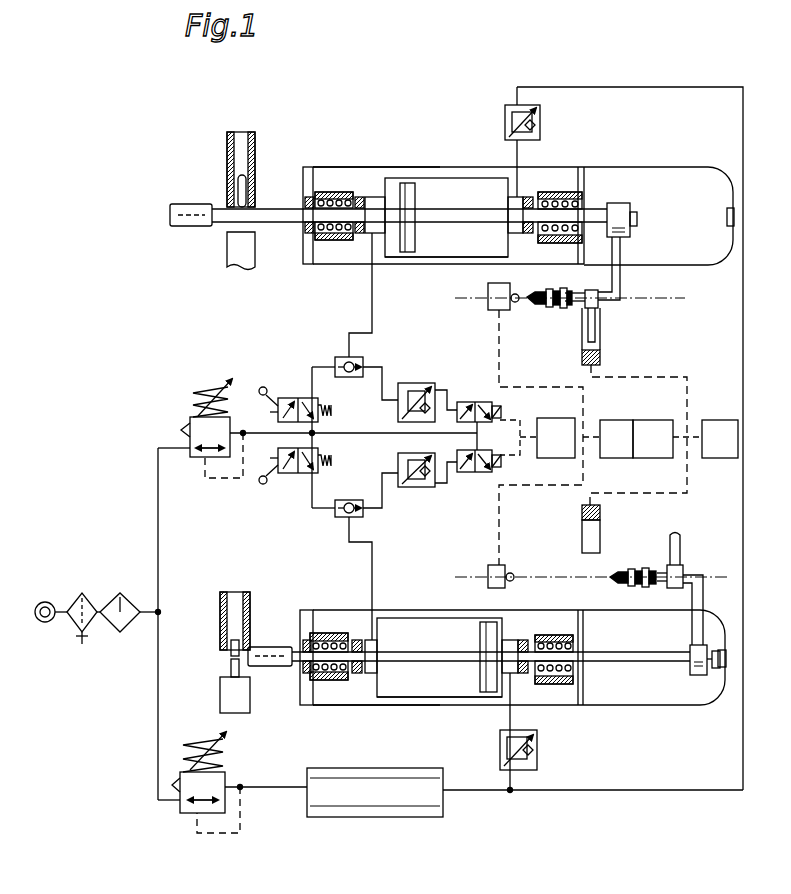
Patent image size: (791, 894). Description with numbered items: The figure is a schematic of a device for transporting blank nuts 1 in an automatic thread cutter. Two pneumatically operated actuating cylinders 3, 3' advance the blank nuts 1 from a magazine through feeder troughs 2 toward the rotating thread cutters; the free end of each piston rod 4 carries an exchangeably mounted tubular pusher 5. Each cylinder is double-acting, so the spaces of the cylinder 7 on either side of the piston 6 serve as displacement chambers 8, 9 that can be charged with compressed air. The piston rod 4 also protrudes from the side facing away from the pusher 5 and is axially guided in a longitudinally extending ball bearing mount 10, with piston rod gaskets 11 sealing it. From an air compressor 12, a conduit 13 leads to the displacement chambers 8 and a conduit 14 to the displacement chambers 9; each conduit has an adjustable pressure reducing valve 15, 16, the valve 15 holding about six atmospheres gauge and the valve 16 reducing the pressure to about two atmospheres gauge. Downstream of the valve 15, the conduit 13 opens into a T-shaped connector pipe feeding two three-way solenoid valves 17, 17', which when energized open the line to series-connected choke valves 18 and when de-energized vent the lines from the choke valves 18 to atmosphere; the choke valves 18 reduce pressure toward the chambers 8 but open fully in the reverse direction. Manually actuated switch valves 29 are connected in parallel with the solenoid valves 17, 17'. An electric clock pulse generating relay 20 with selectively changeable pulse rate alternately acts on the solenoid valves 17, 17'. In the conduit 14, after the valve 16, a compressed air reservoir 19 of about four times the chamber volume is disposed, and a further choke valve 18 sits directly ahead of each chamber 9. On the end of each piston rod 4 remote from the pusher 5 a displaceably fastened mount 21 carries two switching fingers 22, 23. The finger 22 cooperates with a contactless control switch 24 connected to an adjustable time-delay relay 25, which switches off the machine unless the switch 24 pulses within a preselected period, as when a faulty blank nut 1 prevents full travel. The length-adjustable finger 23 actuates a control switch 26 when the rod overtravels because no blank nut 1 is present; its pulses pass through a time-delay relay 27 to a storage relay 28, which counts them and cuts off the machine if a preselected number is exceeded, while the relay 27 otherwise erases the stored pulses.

The blank nut 1 is at (237, 195).
The feeder trough 2 is at (240, 132).
The actuating cylinder 3 is at (518, 192).
The actuating cylinder 3' is at (513, 641).
The piston rod 4 is at (466, 209).
The tubular pusher 5 is at (185, 226).
The piston 6 is at (407, 257).
The cylinder 7 is at (437, 167).
The displacement chamber 8 is at (390, 178).
The displacement chamber 9 is at (442, 257).
The ball bearing mount 10 is at (329, 192).
The piston rod gasket 11 is at (360, 197).
The air compressor 12 is at (100, 592).
The conduit 13 is at (158, 532).
The conduit 14 is at (158, 686).
The pressure reducing valve 15 is at (190, 438).
The pressure reducing valve 16 is at (190, 814).
The three-way solenoid valve 17 is at (495, 403).
The three-way solenoid valve 17' is at (477, 484).
The choke valve 18 is at (506, 106).
The compressed air reservoir 19 is at (367, 800).
The clock pulse generating relay 20 is at (556, 422).
The mount 21 is at (622, 205).
The switching finger 22 is at (600, 326).
The switching finger 23 is at (546, 306).
The control switch 24 is at (600, 357).
The time-delay relay 25 is at (719, 422).
The control switch 26 is at (488, 291).
The time-delay relay 27 is at (614, 422).
The storage relay 28 is at (656, 422).
The manually actuated switch valve 29 is at (299, 398).